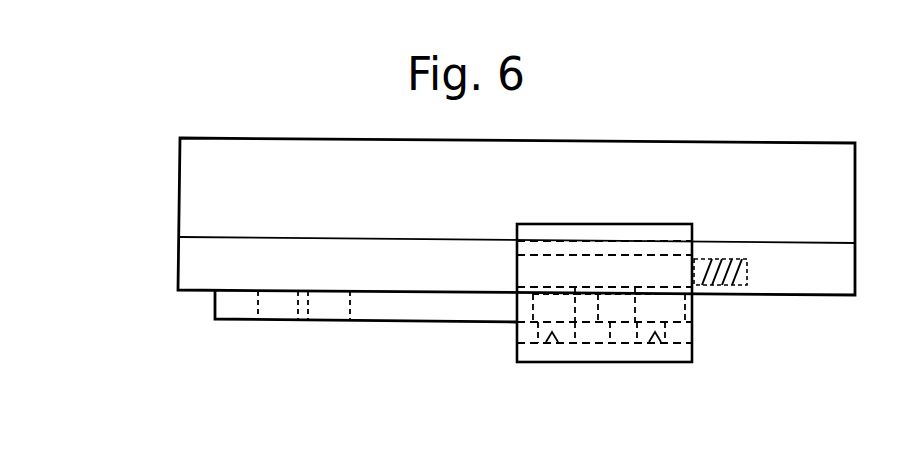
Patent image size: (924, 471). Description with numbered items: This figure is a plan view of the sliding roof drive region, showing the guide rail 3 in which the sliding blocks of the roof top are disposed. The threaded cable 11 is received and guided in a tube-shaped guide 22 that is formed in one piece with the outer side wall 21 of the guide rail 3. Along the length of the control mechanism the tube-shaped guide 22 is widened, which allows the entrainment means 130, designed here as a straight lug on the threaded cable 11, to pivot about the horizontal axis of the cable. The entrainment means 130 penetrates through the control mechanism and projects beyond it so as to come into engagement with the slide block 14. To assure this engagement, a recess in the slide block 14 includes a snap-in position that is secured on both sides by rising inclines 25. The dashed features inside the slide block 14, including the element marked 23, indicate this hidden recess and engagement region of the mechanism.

The guide rail 3 is at (844, 222).
The outer side wall 21 is at (444, 238).
The tube-shaped guide 22 is at (305, 262).
The slide block 14 is at (638, 240).
The sensor element 23 is at (566, 345).
The entrainment means 130 is at (611, 345).
The rising inclines 25 is at (550, 345).
The threaded cable 11 is at (731, 290).